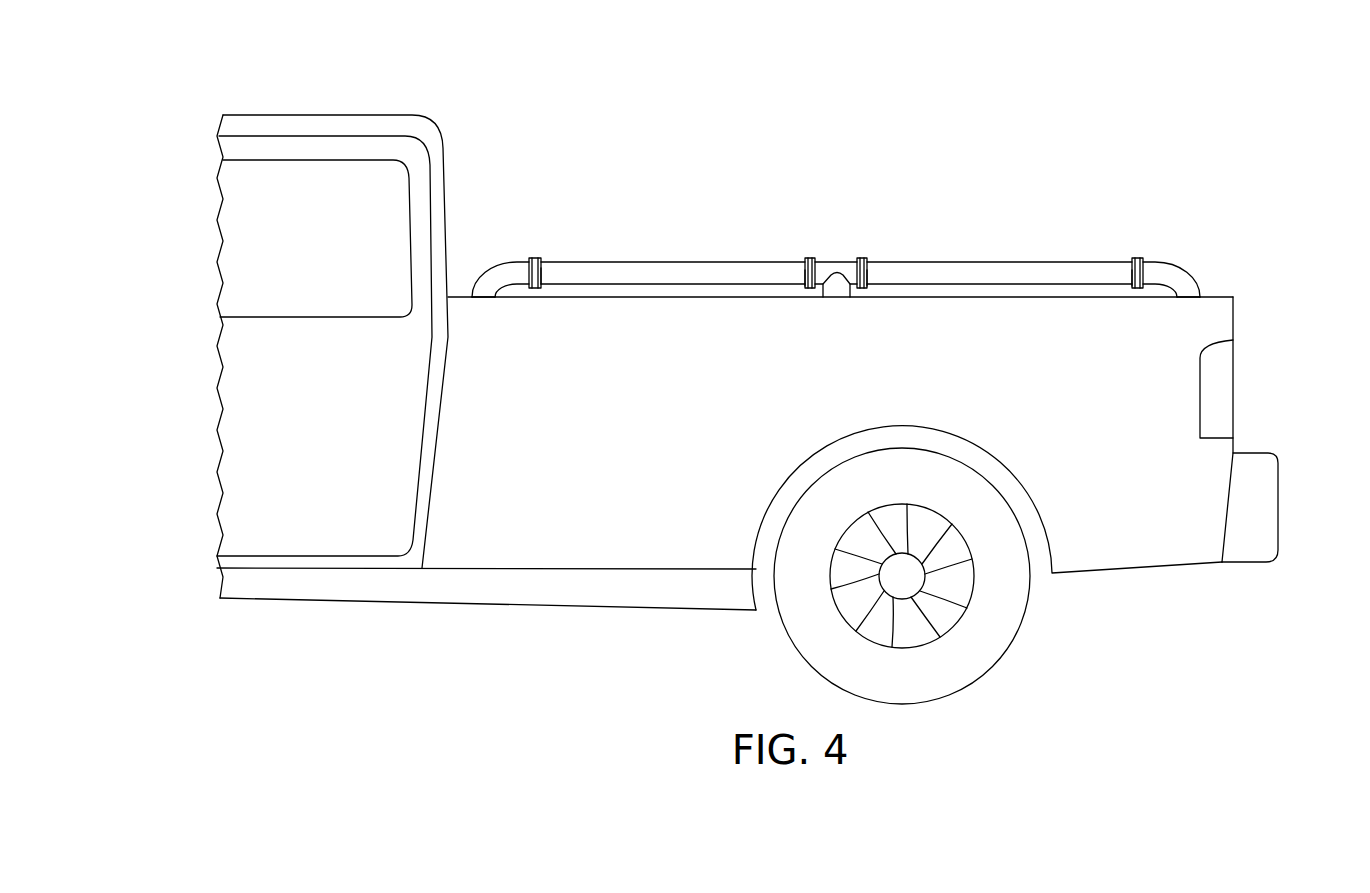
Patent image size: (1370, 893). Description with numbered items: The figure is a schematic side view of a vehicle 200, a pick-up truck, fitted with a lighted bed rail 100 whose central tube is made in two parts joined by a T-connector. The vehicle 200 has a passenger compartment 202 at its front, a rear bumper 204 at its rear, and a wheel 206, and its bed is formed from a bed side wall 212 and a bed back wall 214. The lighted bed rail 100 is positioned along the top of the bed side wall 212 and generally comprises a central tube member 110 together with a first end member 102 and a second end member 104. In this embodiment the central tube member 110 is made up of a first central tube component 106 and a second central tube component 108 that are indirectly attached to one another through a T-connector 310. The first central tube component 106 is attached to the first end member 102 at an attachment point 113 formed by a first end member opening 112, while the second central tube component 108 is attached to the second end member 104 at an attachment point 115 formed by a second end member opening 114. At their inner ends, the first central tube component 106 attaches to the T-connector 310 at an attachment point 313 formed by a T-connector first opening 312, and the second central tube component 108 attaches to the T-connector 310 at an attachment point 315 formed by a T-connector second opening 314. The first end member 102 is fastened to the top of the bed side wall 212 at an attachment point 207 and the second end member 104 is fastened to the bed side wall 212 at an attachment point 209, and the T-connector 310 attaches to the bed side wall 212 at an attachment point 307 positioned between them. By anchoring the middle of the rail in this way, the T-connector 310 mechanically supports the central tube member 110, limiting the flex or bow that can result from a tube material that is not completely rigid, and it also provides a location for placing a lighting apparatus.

The lighted bed rail 100 is at (991, 184).
The first end member 102 is at (503, 260).
The second end member 104 is at (1199, 280).
The first central tube component 106 is at (645, 262).
The second central tube component 108 is at (1048, 262).
The central tube member 110 is at (777, 245).
The first end member opening 112 is at (536, 257).
The attachment point 113 is at (541, 272).
The second end member opening 114 is at (1138, 258).
The attachment point 115 is at (1129, 286).
The vehicle 200 is at (508, 131).
The passenger compartment 202 is at (321, 115).
The rear bumper 204 is at (1268, 453).
The wheel 206 is at (988, 668).
The attachment point 207 is at (484, 298).
The attachment point 209 is at (1180, 297).
The bed side wall 212 is at (700, 298).
The bed back wall 214 is at (1235, 318).
The attachment point 307 is at (838, 297).
The T-connector 310 is at (836, 262).
The T-connector first opening 312 is at (808, 258).
The attachment point 313 is at (793, 286).
The T-connector second opening 314 is at (865, 258).
The attachment point 315 is at (870, 285).